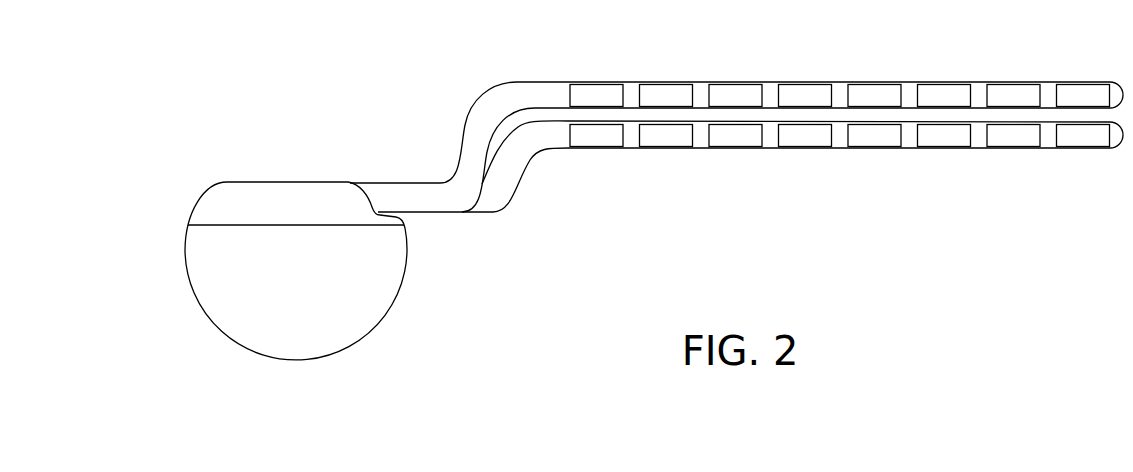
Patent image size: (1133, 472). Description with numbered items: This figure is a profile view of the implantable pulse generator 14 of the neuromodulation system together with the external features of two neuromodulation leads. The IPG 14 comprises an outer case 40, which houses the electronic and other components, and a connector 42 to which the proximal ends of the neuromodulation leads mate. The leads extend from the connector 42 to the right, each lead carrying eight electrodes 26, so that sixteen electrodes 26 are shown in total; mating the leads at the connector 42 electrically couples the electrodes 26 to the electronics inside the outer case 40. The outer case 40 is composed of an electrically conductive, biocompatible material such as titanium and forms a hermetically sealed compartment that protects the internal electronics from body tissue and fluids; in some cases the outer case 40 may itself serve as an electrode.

The implantable pulse generator 14 is at (230, 147).
The outer case 40 is at (400, 282).
The connector 42 is at (302, 185).
The electrodes 26 is at (806, 81).